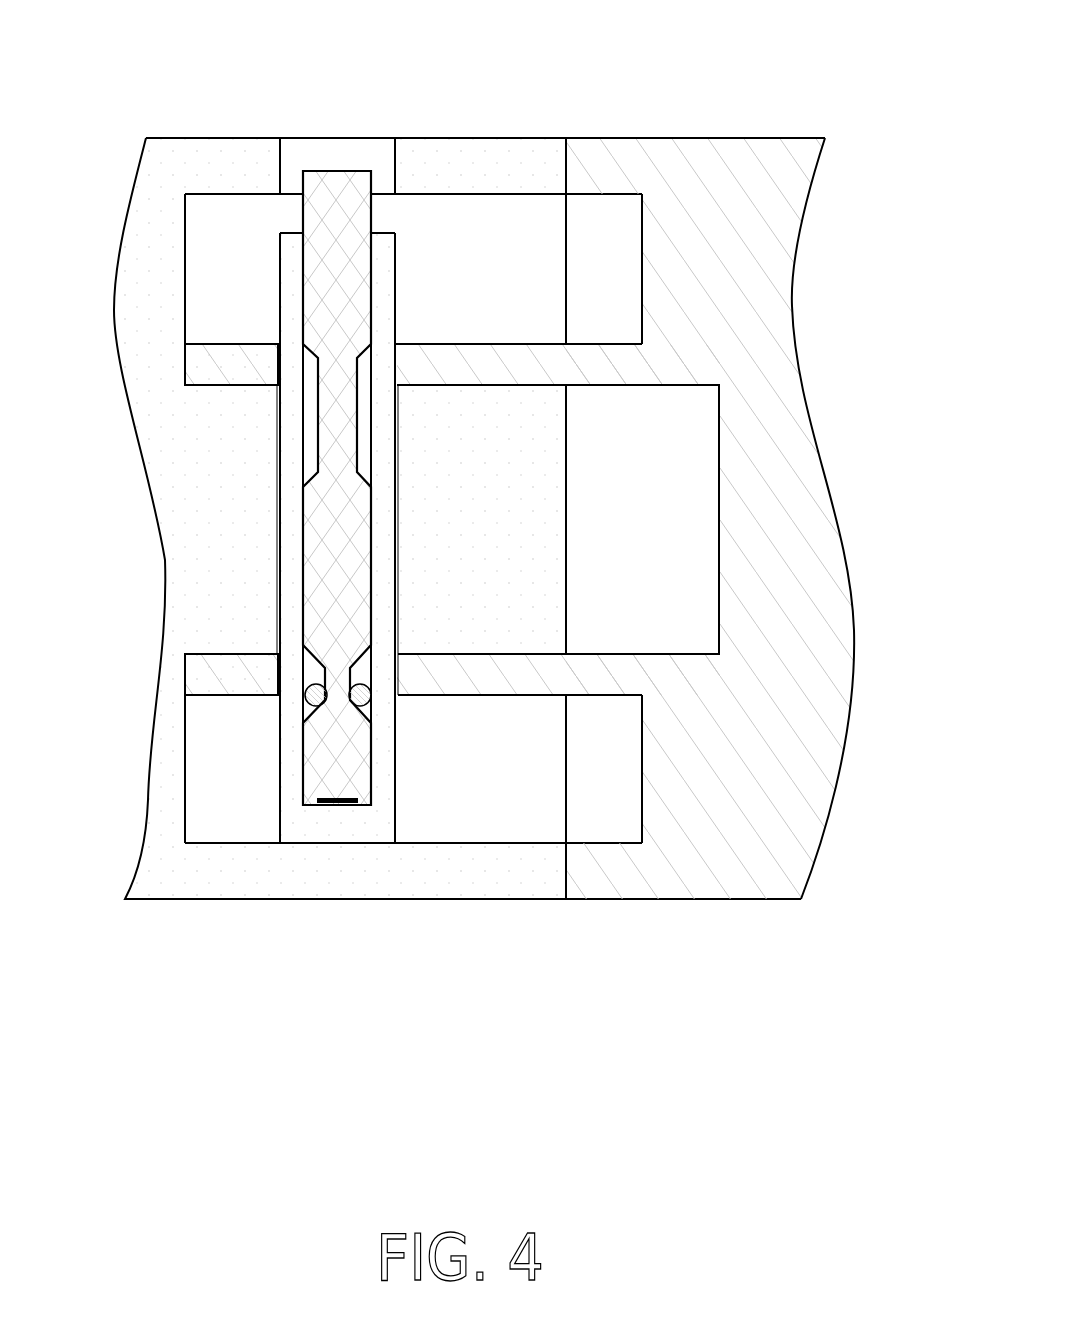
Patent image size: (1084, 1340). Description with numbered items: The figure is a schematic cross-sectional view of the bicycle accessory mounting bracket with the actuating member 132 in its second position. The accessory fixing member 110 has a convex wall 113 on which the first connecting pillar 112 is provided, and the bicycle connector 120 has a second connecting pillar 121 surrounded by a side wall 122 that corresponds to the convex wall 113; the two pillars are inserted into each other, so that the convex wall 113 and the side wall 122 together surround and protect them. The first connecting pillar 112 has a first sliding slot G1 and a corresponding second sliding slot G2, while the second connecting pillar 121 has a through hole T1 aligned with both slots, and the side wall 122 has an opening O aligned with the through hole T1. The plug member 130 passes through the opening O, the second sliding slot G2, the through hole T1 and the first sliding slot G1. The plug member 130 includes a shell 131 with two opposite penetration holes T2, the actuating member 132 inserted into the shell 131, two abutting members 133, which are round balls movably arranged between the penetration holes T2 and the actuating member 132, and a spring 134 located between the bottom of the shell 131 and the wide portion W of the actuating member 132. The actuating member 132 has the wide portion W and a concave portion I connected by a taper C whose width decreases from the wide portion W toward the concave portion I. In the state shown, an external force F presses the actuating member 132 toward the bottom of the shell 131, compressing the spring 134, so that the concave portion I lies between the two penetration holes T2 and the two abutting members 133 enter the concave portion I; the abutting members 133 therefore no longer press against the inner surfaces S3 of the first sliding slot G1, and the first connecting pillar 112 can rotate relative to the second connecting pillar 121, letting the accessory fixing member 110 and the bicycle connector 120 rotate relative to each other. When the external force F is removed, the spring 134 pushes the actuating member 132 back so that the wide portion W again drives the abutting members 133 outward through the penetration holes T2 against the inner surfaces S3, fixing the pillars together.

The accessory fixing member 110 is at (723, 878).
The first connecting pillar 112 is at (523, 365).
The convex wall 113 is at (698, 138).
The bicycle connector 120 is at (243, 878).
The second connecting pillar 121 is at (520, 483).
The side wall 122 is at (217, 138).
The plug member 130 is at (510, 514).
The shell 131 is at (383, 287).
The actuating member 132 is at (353, 197).
The abutting member 133 is at (305, 690).
The spring 134 is at (347, 805).
The opening O is at (293, 157).
The external force F is at (337, 152).
The through hole T1 is at (278, 405).
The penetration hole T2 is at (402, 667).
The concave portion I is at (288, 655).
The inner surface S3 is at (285, 691).
The first sliding slot G1 is at (398, 710).
The second sliding slot G2 is at (398, 344).
The taper C is at (405, 650).
The wide portion W is at (318, 773).